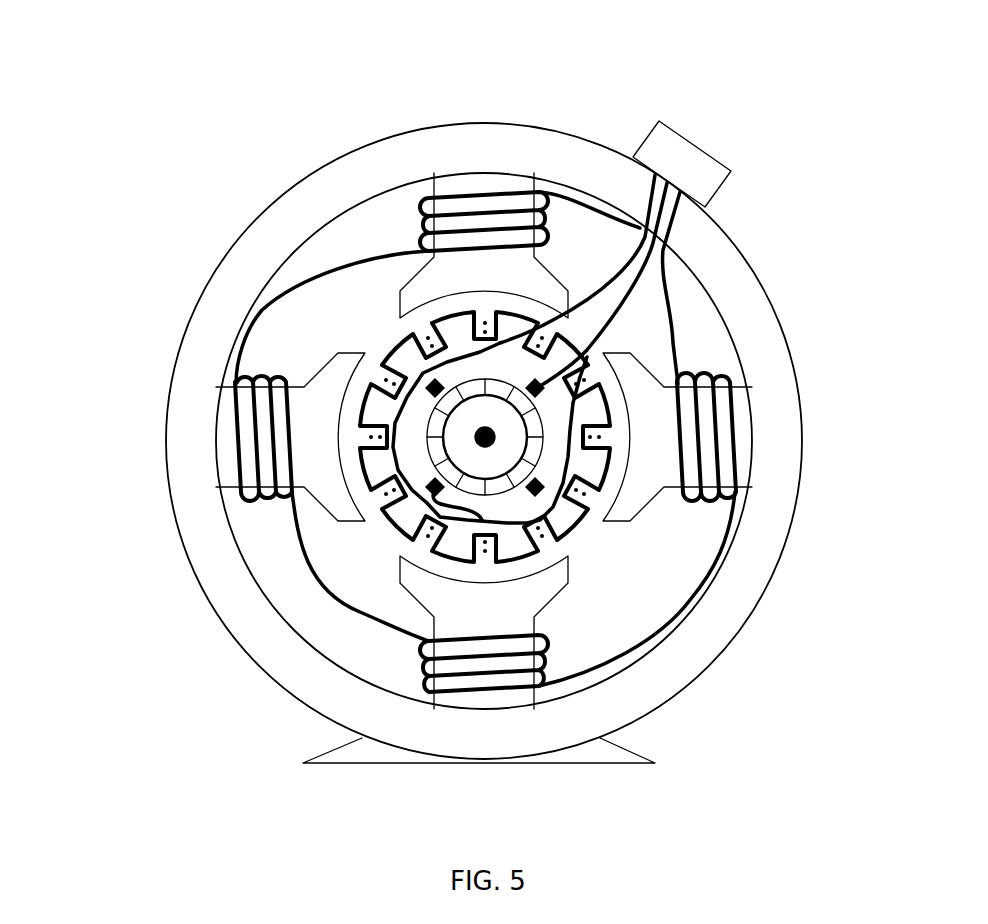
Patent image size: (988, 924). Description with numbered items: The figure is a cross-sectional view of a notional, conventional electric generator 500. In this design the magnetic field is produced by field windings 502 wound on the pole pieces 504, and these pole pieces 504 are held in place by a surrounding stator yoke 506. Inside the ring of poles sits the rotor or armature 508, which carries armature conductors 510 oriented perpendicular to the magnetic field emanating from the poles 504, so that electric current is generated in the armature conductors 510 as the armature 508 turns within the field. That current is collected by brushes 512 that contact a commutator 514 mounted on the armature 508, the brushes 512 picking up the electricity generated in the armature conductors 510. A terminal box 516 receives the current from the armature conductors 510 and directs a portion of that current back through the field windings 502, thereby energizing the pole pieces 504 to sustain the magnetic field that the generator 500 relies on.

The electric generator 500 is at (174, 120).
The field windings 502 is at (224, 466).
The pole pieces 504 is at (200, 419).
The stator yoke 506 is at (210, 282).
The armature 508 is at (392, 524).
The armature conductors 510 is at (408, 538).
The brushes 512 is at (555, 492).
The commutator 514 is at (560, 414).
The terminal box 516 is at (731, 170).